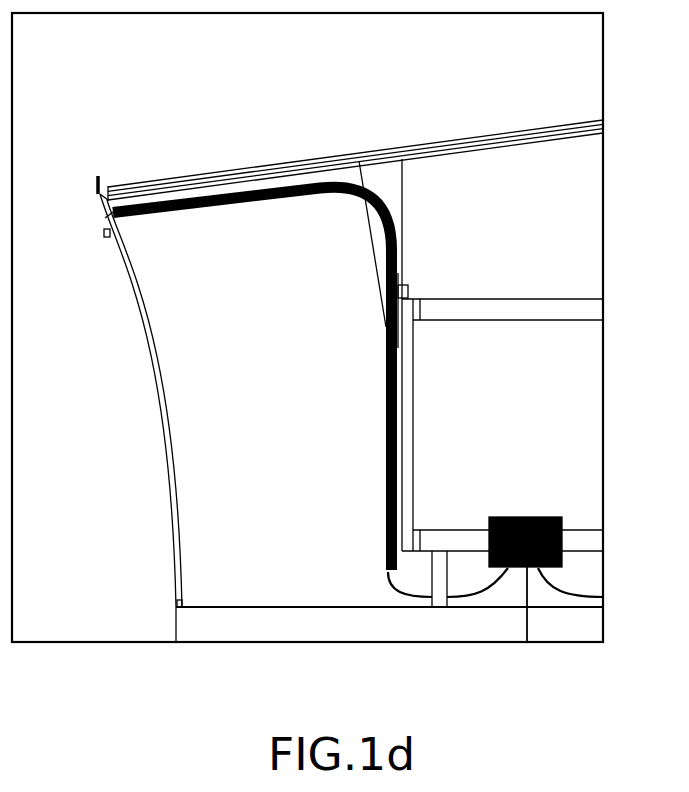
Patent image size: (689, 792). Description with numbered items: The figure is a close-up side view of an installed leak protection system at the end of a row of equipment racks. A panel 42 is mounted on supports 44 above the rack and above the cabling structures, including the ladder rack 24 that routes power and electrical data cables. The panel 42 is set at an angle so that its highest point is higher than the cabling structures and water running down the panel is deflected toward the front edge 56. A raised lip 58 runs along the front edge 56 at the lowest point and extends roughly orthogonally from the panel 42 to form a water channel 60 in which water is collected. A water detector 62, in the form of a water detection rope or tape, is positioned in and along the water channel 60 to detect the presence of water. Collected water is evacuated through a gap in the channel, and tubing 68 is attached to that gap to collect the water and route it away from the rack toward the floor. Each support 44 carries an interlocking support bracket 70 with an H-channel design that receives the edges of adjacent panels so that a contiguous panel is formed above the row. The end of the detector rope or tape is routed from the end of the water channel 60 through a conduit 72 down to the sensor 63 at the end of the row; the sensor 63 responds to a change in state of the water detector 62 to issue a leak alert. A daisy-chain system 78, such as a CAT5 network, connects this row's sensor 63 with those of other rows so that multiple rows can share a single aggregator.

The ladder rack 24 is at (491, 301).
The panel 42 is at (293, 164).
The supports 44 is at (402, 240).
The front edge 56 is at (97, 199).
The raised lip 58 is at (97, 181).
The water channel 60 is at (97, 212).
The water detector 62 is at (103, 219).
The sensor 63 is at (562, 540).
The tubing 68 is at (171, 450).
The interlocking support bracket 70 is at (373, 167).
The conduit 72 is at (392, 286).
The daisy-chain system 78 is at (527, 618).